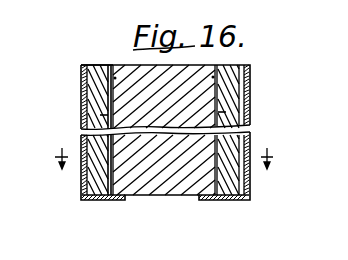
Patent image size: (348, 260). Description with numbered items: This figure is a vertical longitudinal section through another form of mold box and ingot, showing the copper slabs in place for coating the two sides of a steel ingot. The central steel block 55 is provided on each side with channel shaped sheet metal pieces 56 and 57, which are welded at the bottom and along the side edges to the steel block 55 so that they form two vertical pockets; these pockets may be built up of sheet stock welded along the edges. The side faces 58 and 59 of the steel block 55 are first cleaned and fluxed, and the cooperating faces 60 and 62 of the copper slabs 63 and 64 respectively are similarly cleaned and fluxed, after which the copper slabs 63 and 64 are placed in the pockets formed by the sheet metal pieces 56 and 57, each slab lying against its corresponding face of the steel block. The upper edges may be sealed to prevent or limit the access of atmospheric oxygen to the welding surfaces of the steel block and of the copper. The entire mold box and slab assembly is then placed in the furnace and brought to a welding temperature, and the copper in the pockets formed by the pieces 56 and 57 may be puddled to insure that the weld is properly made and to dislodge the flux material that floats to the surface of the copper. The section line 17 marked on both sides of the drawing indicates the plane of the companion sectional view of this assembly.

The steel block 55 is at (173, 200).
The channel shaped sheet metal piece 56 is at (250, 94).
The channel shaped sheet metal piece 57 is at (82, 90).
The face 58 is at (213, 78).
The face 59 is at (82, 73).
The cooperating face 60 is at (249, 112).
The cooperating face 62 is at (85, 115).
The copper slab 63 is at (231, 178).
The copper slab 64 is at (90, 182).
The section line 17 is at (171, 158).